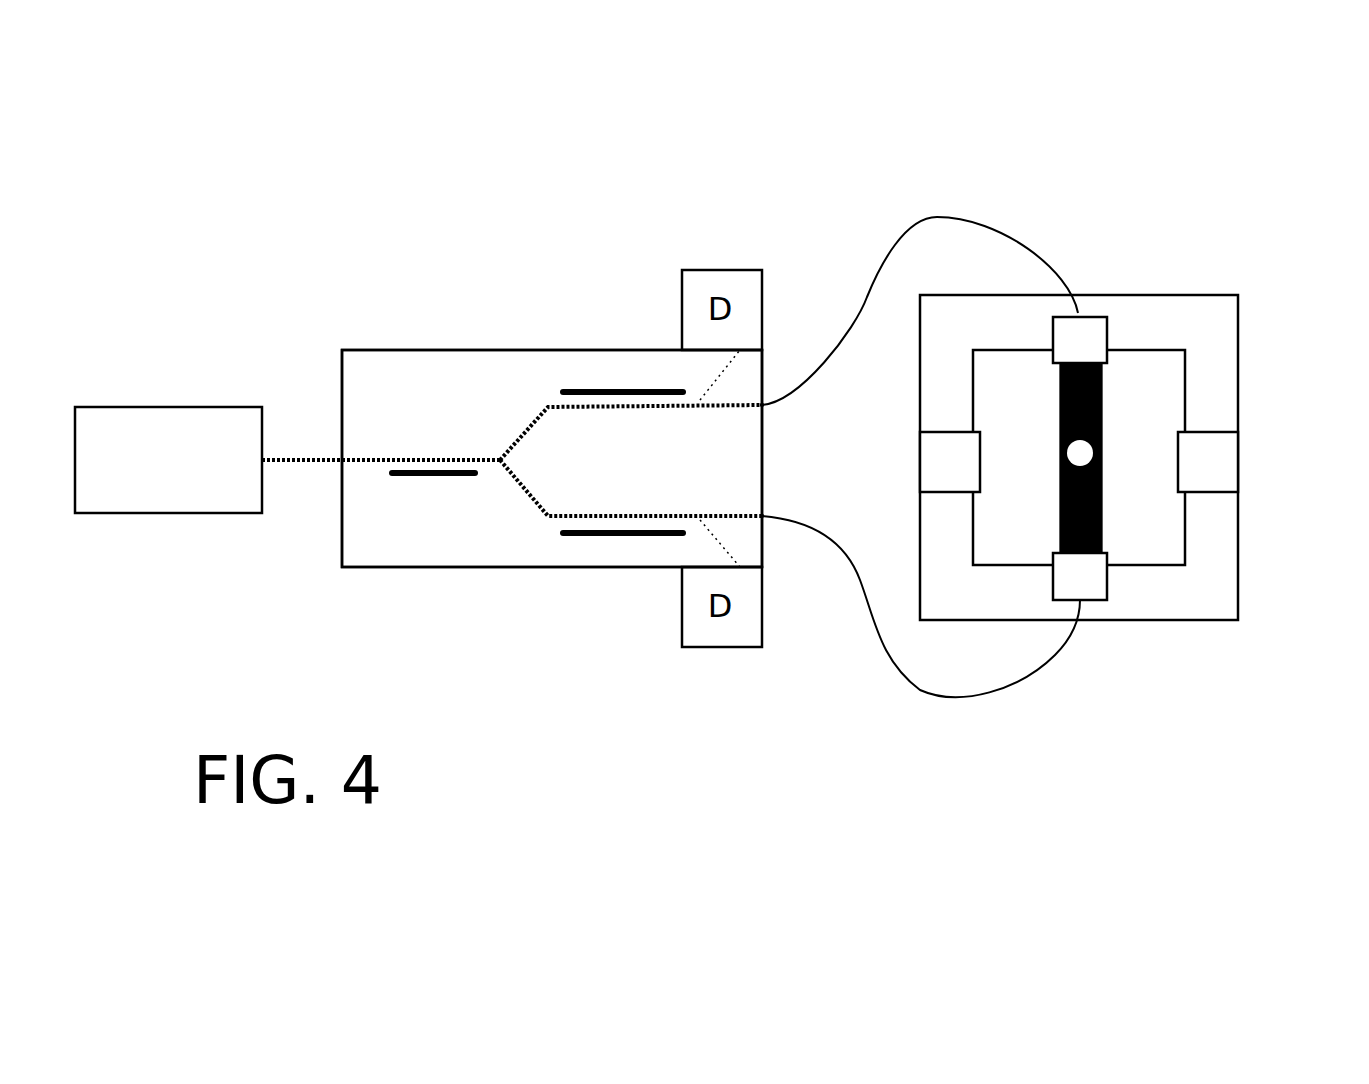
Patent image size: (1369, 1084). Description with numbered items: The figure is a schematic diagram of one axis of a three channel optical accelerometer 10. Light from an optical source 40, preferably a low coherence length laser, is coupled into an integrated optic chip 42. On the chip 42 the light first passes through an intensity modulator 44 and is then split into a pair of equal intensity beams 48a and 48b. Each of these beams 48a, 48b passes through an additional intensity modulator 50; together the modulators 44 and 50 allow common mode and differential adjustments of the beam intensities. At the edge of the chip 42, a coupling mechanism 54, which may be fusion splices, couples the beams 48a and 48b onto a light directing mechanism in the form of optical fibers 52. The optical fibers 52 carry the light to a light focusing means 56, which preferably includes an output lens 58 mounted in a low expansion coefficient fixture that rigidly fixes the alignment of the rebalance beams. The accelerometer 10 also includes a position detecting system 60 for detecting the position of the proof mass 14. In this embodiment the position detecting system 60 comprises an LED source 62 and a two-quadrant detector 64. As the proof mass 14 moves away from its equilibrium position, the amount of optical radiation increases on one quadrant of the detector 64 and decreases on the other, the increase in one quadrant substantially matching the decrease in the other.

The optical accelerometer 10 is at (558, 724).
The proof mass 14 is at (1117, 491).
The optical source 40 is at (155, 406).
The integrated optic chip 42 is at (400, 303).
The intensity modulator 44 is at (420, 478).
The beam 48a is at (522, 436).
The beam 48b is at (522, 490).
The additional intensity modulator 50 is at (613, 390).
The optical fibers 52 is at (945, 217).
The coupling mechanism 54 is at (765, 400).
The light focusing means 56 is at (1098, 248).
The output lens 58 is at (1129, 293).
The position detecting system 60 is at (1076, 507).
The LED source 62 is at (927, 400).
The two-quadrant detector 64 is at (1269, 470).